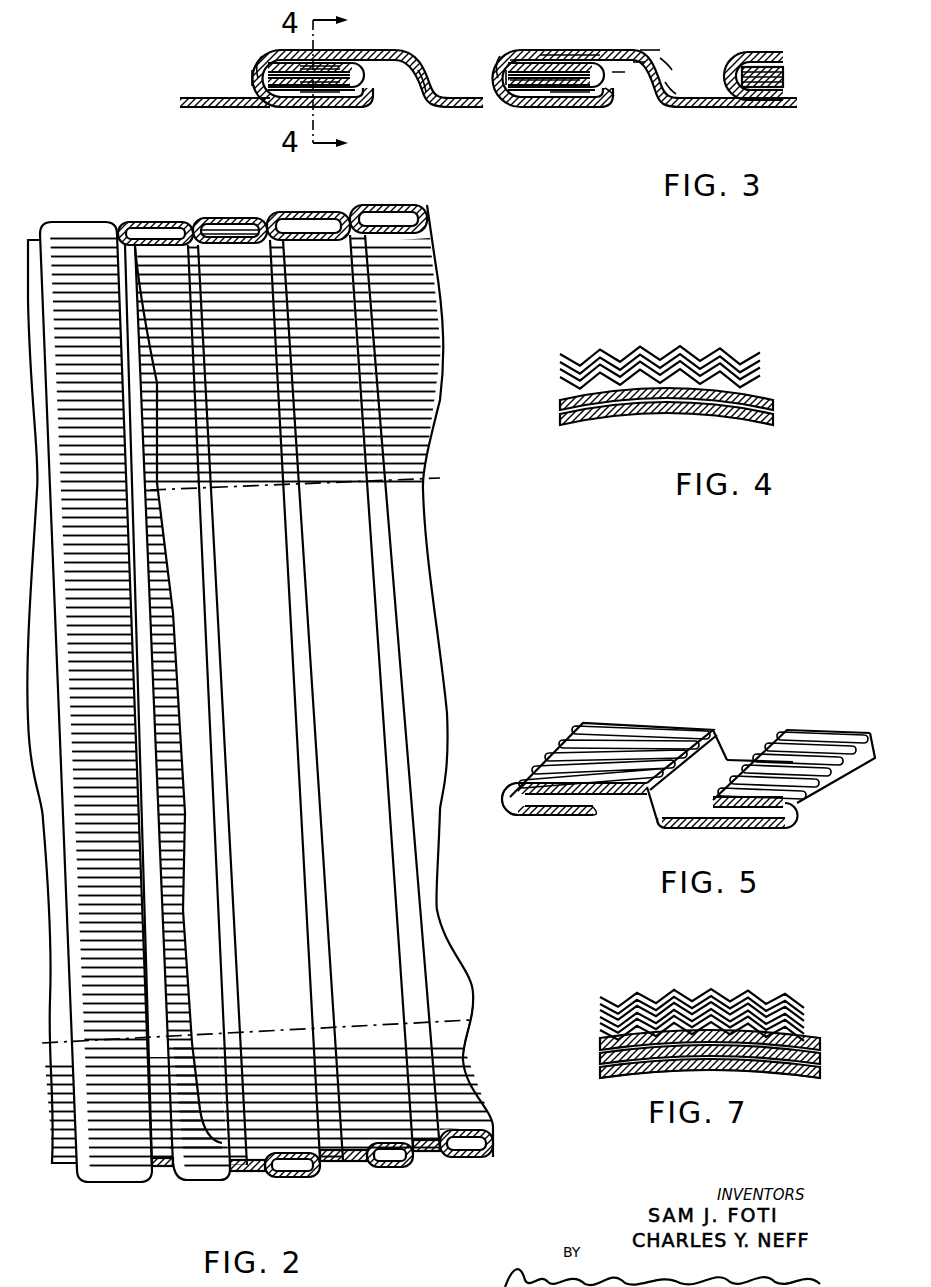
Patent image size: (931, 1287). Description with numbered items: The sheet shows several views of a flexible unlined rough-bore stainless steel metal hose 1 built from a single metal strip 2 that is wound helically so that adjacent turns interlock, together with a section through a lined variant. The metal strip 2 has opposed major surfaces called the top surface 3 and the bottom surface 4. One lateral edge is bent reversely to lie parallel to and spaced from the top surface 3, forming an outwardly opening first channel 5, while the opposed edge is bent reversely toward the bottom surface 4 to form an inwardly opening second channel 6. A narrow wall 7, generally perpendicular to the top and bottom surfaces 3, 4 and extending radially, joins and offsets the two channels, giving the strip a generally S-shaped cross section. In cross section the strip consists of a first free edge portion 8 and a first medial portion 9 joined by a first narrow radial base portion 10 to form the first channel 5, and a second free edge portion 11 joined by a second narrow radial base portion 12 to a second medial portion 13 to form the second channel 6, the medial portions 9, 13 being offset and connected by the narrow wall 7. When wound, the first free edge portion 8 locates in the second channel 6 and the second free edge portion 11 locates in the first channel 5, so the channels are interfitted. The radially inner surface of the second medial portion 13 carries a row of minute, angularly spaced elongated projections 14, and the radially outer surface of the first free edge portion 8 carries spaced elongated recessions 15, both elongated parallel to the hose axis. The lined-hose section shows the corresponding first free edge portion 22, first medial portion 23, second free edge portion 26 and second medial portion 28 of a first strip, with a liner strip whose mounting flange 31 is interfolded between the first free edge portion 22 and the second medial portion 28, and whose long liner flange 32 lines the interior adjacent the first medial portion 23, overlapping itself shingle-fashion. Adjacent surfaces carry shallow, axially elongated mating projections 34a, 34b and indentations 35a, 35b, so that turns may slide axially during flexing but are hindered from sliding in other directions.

In FIG. 2, the metal hose 1 is at (77, 208).
In FIG. 3, the metal strip 2 is at (676, 62).
In FIG. 2, the metal strip 2 is at (436, 199).
In FIG. 3, the top surface 3 is at (650, 50).
In FIG. 3, the bottom surface 4 is at (637, 67).
In FIG. 3, the first channel 5 is at (368, 102).
In FIG. 3, the second channel 6 is at (250, 68).
In FIG. 3, the narrow wall 7 is at (430, 65).
In FIG. 5, the narrow wall 7 is at (703, 753).
In FIG. 3, the first free edge portion 8 is at (238, 109).
In FIG. 2, the first free edge portion 8 is at (241, 222).
In FIG. 4, the first free edge portion 8 is at (560, 400).
In FIG. 5, the first free edge portion 8 is at (747, 800).
In FIG. 3, the first medial portion 9 is at (557, 100).
In FIG. 2, the first medial portion 9 is at (233, 250).
In FIG. 4, the first medial portion 9 is at (567, 417).
In FIG. 5, the first medial portion 9 is at (740, 830).
In FIG. 3, the first base portion 10 is at (613, 93).
In FIG. 5, the first base portion 10 is at (807, 797).
In FIG. 3, the second free edge portion 11 is at (338, 97).
In FIG. 2, the second free edge portion 11 is at (210, 234).
In FIG. 4, the second free edge portion 11 is at (560, 408).
In FIG. 5, the second free edge portion 11 is at (555, 815).
In FIG. 3, the second base portion 12 is at (247, 75).
In FIG. 2, the second base portion 12 is at (495, 812).
In FIG. 5, the second base portion 12 is at (503, 807).
In FIG. 3, the second medial portion 13 is at (322, 62).
In FIG. 2, the second medial portion 13 is at (213, 222).
In FIG. 4, the second medial portion 13 is at (560, 382).
In FIG. 5, the second medial portion 13 is at (610, 783).
In FIG. 3, the projections 14 is at (377, 70).
In FIG. 4, the projections 14 is at (673, 377).
In FIG. 5, the projections 14 is at (593, 807).
In FIG. 3, the recessions 15 is at (548, 80).
In FIG. 4, the recessions 15 is at (677, 377).
In FIG. 5, the recessions 15 is at (780, 790).
In FIG. 7, the first free edge portion 22 is at (812, 1035).
In FIG. 7, the first medial portion 23 is at (820, 1060).
In FIG. 7, the second free edge portion 26 is at (823, 1053).
In FIG. 7, the second medial portion 28 is at (800, 1008).
In FIG. 7, the mounting flange 31 is at (808, 1022).
In FIG. 7, the liner flange 32 is at (822, 1080).
In FIG. 7, the mating projection 34a is at (713, 1003).
In FIG. 7, the mating projection 34b is at (723, 1010).
In FIG. 7, the indentation 35a is at (710, 1015).
In FIG. 7, the indentation 35b is at (707, 1005).